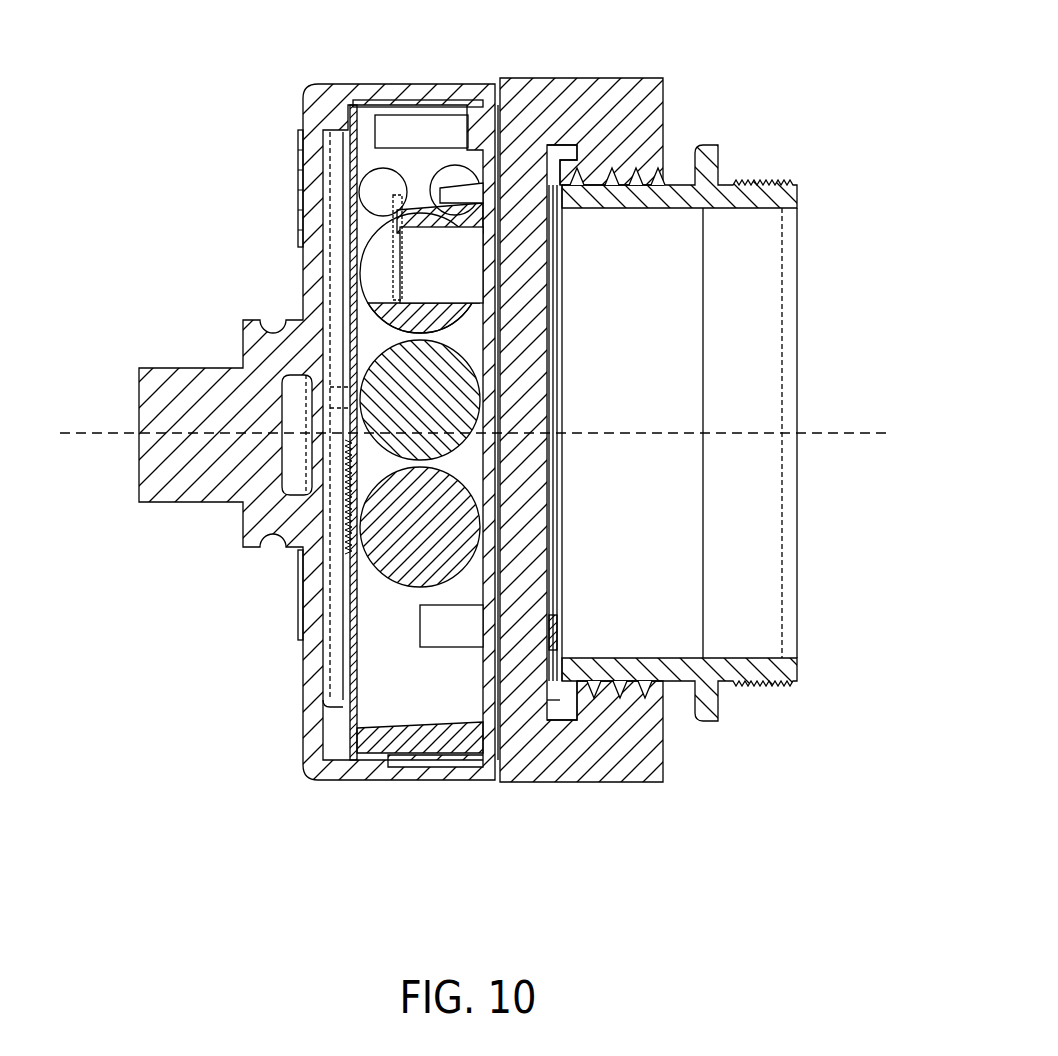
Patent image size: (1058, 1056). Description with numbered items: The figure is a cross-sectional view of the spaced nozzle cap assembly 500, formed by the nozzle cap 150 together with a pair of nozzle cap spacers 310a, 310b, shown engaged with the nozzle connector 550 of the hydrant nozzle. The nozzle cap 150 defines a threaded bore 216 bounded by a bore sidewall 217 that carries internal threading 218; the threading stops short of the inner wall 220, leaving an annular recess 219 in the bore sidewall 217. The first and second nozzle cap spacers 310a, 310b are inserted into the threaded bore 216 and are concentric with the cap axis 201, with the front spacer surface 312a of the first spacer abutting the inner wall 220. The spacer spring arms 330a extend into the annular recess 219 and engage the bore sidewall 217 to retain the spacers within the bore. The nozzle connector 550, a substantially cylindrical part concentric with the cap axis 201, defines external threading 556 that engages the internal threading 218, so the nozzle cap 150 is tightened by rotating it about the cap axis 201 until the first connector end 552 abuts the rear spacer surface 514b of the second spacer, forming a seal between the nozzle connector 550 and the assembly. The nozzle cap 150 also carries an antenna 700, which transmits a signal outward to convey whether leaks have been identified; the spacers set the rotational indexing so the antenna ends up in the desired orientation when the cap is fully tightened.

The nozzle cap 150 is at (341, 806).
The cap axis 201 is at (85, 428).
The threaded bore 216 is at (620, 512).
The bore sidewall 217 is at (570, 693).
The internal threading 218 is at (625, 690).
The annular recess 219 is at (564, 156).
The inner wall 220 is at (568, 628).
The first nozzle cap spacer 310a is at (550, 310).
The second nozzle cap spacer 310b is at (556, 338).
The front spacer surface 312a is at (543, 228).
The spacer spring arms 330a is at (545, 700).
The spaced nozzle cap assembly 500 is at (531, 815).
The rear spacer surface 514b is at (570, 404).
The nozzle connector 550 is at (776, 152).
The first connector end 552 is at (543, 667).
The external threading 556 is at (613, 172).
The antenna 700 is at (412, 128).